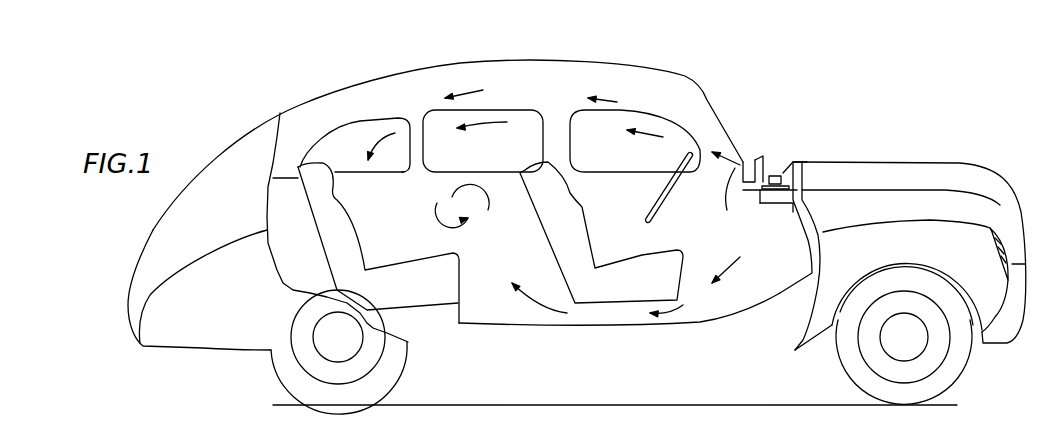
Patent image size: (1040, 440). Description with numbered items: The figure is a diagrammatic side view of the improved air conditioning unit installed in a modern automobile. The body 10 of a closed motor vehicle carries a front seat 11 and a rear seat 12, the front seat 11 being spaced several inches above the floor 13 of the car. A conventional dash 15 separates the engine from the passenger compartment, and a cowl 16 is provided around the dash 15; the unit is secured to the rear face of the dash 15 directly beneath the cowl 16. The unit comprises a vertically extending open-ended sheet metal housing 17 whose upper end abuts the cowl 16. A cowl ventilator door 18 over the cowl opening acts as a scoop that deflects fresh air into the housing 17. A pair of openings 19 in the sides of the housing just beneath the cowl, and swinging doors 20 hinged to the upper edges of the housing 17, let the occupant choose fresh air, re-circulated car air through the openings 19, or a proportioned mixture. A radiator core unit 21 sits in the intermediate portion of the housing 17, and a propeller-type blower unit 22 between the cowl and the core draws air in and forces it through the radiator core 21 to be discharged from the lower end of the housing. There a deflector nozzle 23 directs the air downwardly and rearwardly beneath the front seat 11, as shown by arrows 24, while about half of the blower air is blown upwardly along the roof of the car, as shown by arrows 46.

The body 10 is at (433, 65).
The front seat 11 is at (601, 232).
The rear seat 12 is at (378, 243).
The floor 13 is at (523, 326).
The dash 15 is at (813, 242).
The cowl 16 is at (759, 158).
The housing 17 is at (760, 219).
The cowl ventilator door 18 is at (770, 165).
The openings 19 is at (807, 162).
The swinging doors 20 is at (766, 165).
The radiator core unit 21 is at (788, 200).
The blower unit 22 is at (783, 181).
The deflector nozzle 23 is at (793, 212).
The arrows 24 is at (683, 305).
The arrows 46 is at (617, 102).